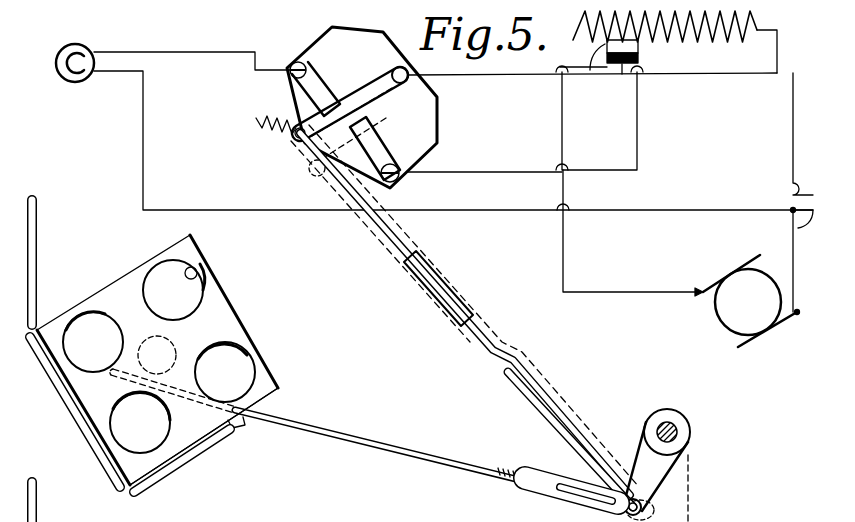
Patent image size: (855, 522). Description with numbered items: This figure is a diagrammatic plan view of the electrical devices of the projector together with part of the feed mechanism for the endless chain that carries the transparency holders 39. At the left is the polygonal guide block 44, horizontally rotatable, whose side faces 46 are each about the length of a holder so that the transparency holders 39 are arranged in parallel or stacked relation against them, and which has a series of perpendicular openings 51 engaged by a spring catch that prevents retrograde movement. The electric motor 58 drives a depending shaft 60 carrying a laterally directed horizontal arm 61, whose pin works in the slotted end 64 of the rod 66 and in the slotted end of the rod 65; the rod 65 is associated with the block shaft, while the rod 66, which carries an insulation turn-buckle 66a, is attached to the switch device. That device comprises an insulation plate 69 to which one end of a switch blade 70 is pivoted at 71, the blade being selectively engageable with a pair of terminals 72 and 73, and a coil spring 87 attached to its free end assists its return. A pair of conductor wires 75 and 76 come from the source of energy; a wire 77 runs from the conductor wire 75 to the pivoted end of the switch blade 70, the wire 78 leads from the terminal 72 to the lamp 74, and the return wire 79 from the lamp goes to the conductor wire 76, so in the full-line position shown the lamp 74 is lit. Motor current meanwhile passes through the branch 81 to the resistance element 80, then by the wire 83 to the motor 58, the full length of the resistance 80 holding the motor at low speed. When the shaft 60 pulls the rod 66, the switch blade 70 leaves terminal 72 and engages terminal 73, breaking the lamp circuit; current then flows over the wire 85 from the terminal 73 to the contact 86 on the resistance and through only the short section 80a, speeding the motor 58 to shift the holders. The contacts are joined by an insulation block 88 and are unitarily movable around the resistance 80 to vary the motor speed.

The transparency holders 39 is at (173, 469).
The polygonal guide block 44 is at (219, 318).
The side faces 46 is at (112, 283).
The perpendicular openings 51 is at (199, 277).
The electric motor 58 is at (717, 314).
The driven shaft 60 is at (672, 430).
The horizontal arm 61 is at (660, 471).
The slotted end 64 is at (552, 395).
The rod 65 is at (364, 440).
The rod 66 is at (412, 254).
The insulation turn-buckle 66a is at (449, 267).
The insulation plate 69 is at (313, 50).
The switch blade 70 is at (358, 92).
The pivot 71 is at (404, 66).
The terminal 72 is at (300, 93).
The terminal 73 is at (384, 153).
The lamp 74 is at (68, 46).
The conductor wire 75 is at (793, 185).
The conductor wire 76 is at (793, 220).
The wire 77 is at (498, 78).
The wire 78 is at (196, 53).
The return wire 79 is at (143, 134).
The resistance element 80 is at (586, 22).
The resistance section 80a is at (604, 66).
The branch 81 is at (779, 56).
The wire 83 is at (562, 70).
The conductor 85 is at (496, 172).
The contact 86 is at (640, 50).
The coil spring 87 is at (256, 118).
The insulation block 88 is at (622, 66).